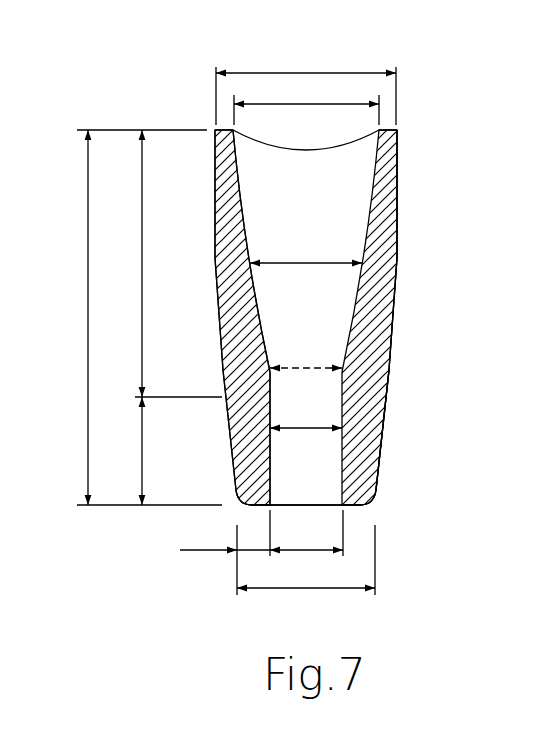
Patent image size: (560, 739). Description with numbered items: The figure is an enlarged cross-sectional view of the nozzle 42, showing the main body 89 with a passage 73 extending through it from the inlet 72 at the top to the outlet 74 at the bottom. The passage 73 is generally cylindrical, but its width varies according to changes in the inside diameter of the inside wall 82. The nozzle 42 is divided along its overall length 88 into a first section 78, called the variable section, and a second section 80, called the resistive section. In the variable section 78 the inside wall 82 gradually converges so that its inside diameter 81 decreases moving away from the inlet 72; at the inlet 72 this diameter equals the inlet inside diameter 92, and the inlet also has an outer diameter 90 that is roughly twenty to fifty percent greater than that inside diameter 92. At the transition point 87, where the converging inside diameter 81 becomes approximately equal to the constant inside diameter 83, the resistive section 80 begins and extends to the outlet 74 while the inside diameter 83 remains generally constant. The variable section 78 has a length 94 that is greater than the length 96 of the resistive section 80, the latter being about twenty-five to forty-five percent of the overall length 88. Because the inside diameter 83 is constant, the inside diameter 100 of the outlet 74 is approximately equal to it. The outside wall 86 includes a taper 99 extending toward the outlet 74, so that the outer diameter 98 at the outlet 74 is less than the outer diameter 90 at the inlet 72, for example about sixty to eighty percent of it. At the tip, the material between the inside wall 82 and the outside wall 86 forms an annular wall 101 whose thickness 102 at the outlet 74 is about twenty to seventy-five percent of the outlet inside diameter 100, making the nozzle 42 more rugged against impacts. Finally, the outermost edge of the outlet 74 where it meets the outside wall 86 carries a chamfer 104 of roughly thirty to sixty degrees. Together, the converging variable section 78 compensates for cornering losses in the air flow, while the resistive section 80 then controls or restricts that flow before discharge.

The nozzle 42 is at (196, 84).
The inlet 72 is at (395, 128).
The passage 73 is at (324, 193).
The outlet 74 is at (348, 507).
The first section 78 is at (457, 130).
The second section 80 is at (457, 403).
The inside diameter 81 is at (327, 262).
The inside wall 82 is at (247, 255).
The inside diameter 83 is at (323, 427).
The outside wall 86 is at (216, 275).
The transition point 87 is at (267, 372).
The overall length 88 is at (88, 350).
The main body 89 is at (395, 182).
The outer diameter 90 is at (331, 72).
The inside diameter 92 is at (315, 102).
The length 94 is at (142, 295).
The length 96 is at (142, 463).
The outer diameter 98 is at (303, 590).
The taper 99 is at (412, 322).
The inside diameter 100 is at (318, 549).
The annular wall 101 is at (256, 476).
The thickness 102 is at (202, 553).
The chamfer 104 is at (236, 507).